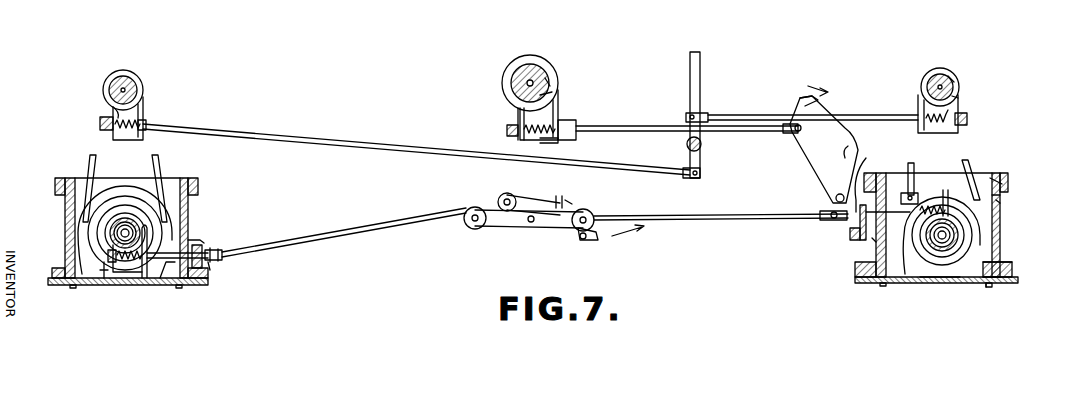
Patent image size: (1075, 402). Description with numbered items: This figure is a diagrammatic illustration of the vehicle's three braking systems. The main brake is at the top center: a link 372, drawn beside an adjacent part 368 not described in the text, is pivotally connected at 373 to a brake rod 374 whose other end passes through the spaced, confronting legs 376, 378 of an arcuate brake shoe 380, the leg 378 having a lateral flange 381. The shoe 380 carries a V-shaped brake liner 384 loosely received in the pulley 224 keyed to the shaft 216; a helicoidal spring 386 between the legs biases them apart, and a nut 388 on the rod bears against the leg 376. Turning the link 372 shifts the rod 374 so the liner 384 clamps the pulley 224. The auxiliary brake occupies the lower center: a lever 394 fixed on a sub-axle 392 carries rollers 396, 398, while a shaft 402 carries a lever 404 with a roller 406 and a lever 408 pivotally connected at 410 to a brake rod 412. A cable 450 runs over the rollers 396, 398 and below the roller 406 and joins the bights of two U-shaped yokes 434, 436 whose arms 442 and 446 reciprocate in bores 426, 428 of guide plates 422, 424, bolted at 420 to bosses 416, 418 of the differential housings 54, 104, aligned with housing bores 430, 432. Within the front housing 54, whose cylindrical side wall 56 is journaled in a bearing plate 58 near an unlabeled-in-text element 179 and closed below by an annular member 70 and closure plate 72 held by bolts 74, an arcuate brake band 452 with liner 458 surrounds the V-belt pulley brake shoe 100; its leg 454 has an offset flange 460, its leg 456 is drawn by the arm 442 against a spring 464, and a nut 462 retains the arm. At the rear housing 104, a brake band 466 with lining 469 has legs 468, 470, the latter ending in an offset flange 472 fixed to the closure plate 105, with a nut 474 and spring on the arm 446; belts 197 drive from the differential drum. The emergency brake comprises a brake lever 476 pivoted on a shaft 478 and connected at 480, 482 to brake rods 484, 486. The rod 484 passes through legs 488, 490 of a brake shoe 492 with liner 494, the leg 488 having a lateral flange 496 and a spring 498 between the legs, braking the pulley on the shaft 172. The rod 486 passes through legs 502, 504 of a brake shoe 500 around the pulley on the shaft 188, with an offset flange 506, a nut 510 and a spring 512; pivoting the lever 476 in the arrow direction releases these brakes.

The differential housing 54 is at (1012, 220).
The cylindrical side wall 56 is at (1004, 202).
The bearing plate 58 is at (1006, 180).
The annular member 70 is at (1010, 270).
The cylindrical closure plate 72 is at (992, 286).
The bolts 74 is at (990, 284).
The V-belt pulley brake shoe 100 is at (945, 280).
The differential housing 104 is at (55, 227).
The closure plate 105 is at (112, 280).
The shaft 172 is at (935, 78).
The housing wall 179 is at (1004, 194).
The shaft 188 is at (113, 88).
The V-pulley belts 197 is at (90, 162).
The shaft 216 is at (542, 75).
The pulley 224 is at (553, 98).
The link 368 is at (856, 148).
The link 372 is at (818, 168).
The pivotal connection 373 is at (796, 106).
The brake rod 374 is at (636, 126).
The leg 376 is at (518, 118).
The leg 378 is at (560, 110).
The arcuate brake shoe 380 is at (533, 56).
The lateral flange 381 is at (577, 125).
The V-shaped brake liner 384 is at (550, 86).
The helicoidal spring 386 is at (546, 143).
The nut 388 is at (506, 134).
The sub-axle 392 is at (528, 224).
The lever 394 is at (505, 228).
The roller 396 is at (470, 229).
The roller 398 is at (592, 212).
The shaft 402 is at (556, 200).
The lever 404 is at (538, 200).
The roller 406 is at (506, 192).
The lever 408 is at (572, 203).
The pivotal connection 410 is at (550, 242).
The brake rod 412 is at (655, 218).
The boss 416 is at (878, 240).
The boss 418 is at (188, 252).
The bolts 420 is at (200, 248).
The guide plate 422 is at (858, 222).
The guide plate 424 is at (240, 244).
The bore 426 is at (870, 167).
The bore 428 is at (212, 265).
The bore 430 is at (900, 170).
The bore 432 is at (170, 282).
The U-shaped yoke 434 is at (819, 207).
The U-shaped yoke 436 is at (280, 229).
The arm 442 is at (890, 246).
The arm 446 is at (192, 240).
The cable 450 is at (648, 220).
The arcuate brake band 452 is at (936, 265).
The leg 454 is at (928, 250).
The leg 456 is at (970, 178).
The V-belt brake liner 458 is at (962, 243).
The offset flange 460 is at (918, 192).
The nut 462 is at (988, 178).
The helicoidal spring 464 is at (950, 205).
The arcuate brake band 466 is at (128, 213).
The leg 468 is at (116, 264).
The V-brake lining 469 is at (135, 225).
The leg 470 is at (150, 240).
The offset flange 472 is at (134, 262).
The nut 474 is at (110, 258).
The brake lever 476 is at (700, 72).
The shaft 478 is at (703, 146).
The pivotal connection 480 is at (705, 113).
The pivotal connection 482 is at (702, 173).
The brake rod 484 is at (870, 115).
The brake rod 486 is at (384, 146).
The leg 488 is at (918, 102).
The leg 490 is at (956, 98).
The arcuate brake shoe 492 is at (942, 68).
The V-belt brake liner 494 is at (952, 78).
The lateral flange 496 is at (968, 118).
The helicoidal spring 498 is at (920, 128).
The arcuate brake shoe 500 is at (135, 74).
The leg 502 is at (112, 112).
The leg 504 is at (144, 107).
The offset flange 506 is at (112, 135).
The nut 510 is at (98, 124).
The helicoidal spring 512 is at (150, 115).